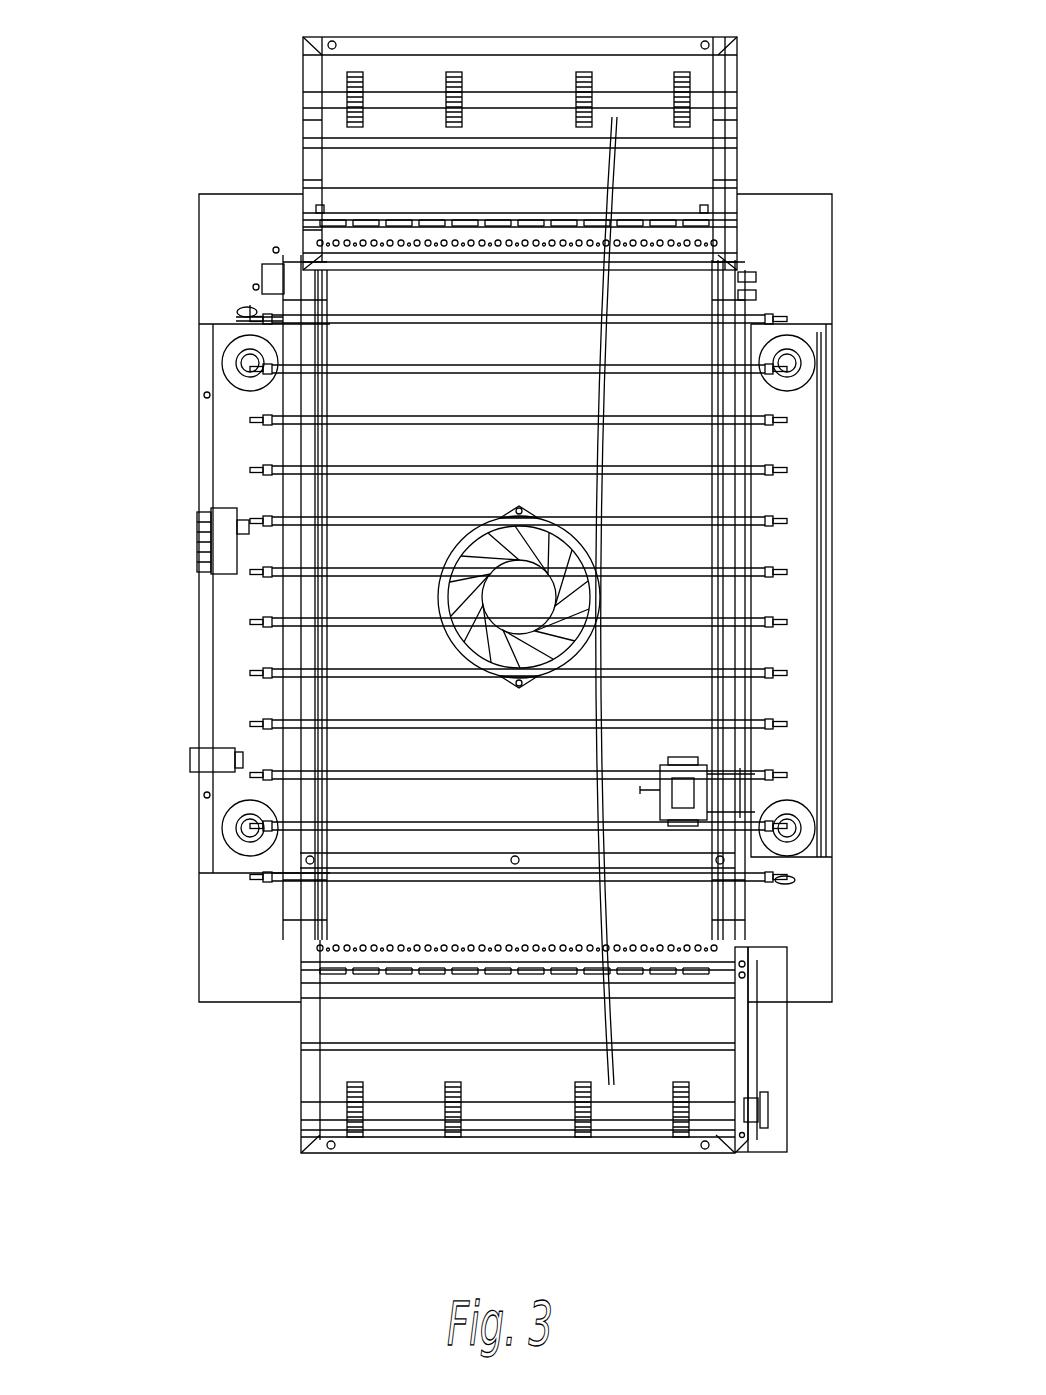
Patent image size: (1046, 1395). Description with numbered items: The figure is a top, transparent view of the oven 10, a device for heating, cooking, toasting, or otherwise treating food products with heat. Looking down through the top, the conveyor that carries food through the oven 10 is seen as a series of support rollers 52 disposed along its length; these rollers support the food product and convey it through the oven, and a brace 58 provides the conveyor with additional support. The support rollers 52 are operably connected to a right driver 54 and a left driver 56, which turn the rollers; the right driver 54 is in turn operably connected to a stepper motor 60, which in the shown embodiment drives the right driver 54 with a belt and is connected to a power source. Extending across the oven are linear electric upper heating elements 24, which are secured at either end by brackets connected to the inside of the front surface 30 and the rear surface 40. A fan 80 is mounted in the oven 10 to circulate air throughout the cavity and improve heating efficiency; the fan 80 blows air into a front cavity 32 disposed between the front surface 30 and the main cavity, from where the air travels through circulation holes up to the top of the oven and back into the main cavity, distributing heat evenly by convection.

The oven 10 is at (165, 85).
The upper heating elements 24 is at (770, 470).
The front surface 30 is at (199, 450).
The front cavity 32 is at (254, 655).
The rear surface 40 is at (832, 720).
The support rollers 52 is at (693, 145).
The right driver 54 is at (690, 1103).
The left driver 56 is at (693, 83).
The brace 58 is at (690, 190).
The stepper motor 60 is at (725, 785).
The fan 80 is at (585, 553).